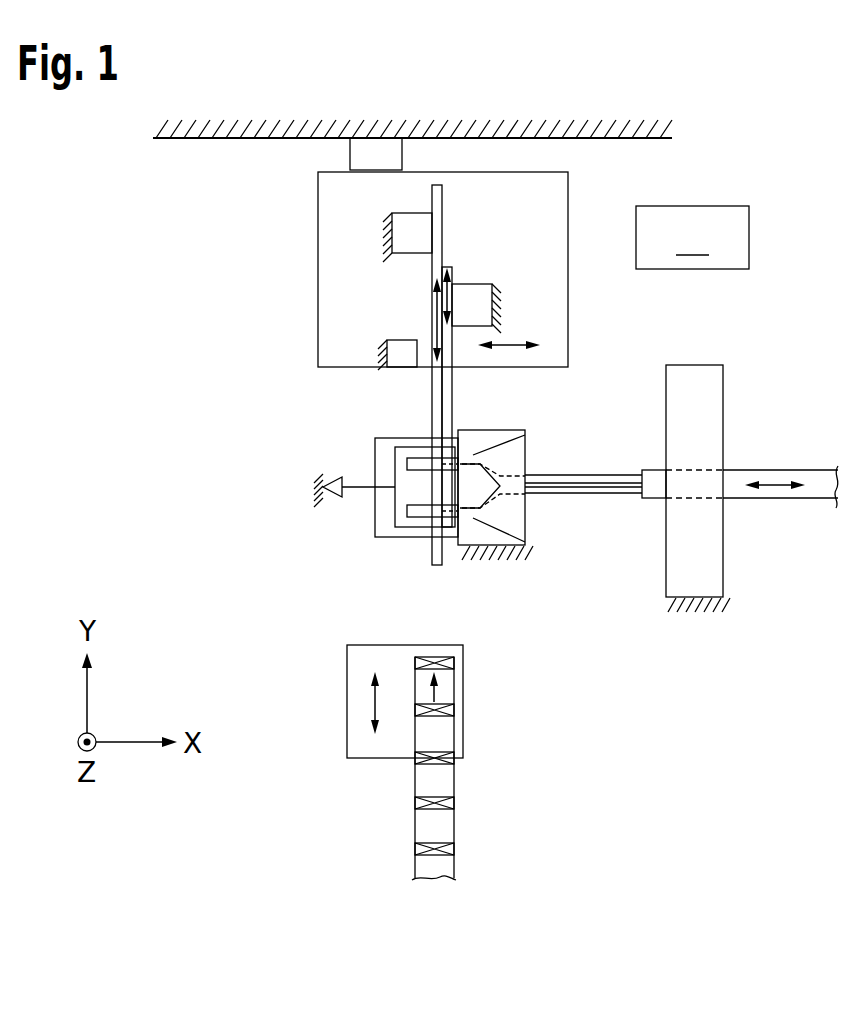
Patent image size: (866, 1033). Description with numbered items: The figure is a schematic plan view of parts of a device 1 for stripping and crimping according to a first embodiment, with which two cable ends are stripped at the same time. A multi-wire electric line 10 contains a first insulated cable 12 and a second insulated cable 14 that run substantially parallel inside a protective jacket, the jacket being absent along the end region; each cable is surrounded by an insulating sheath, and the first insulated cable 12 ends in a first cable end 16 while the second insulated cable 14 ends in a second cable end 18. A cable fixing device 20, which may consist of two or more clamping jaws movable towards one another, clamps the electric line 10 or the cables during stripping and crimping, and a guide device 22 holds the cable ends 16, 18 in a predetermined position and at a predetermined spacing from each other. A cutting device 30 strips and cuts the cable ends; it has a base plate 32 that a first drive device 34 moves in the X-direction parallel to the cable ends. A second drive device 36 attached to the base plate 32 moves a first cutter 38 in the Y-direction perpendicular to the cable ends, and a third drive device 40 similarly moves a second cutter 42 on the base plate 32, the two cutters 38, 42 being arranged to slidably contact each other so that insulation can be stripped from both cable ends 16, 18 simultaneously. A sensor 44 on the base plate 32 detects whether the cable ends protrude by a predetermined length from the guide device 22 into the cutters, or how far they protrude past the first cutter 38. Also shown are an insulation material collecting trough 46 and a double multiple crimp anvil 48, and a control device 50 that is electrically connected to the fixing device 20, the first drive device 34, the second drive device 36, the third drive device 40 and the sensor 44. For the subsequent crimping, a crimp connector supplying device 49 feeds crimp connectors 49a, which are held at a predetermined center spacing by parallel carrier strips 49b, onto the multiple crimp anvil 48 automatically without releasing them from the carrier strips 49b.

The device for stripping and crimping 1 is at (716, 162).
The multi-wire electric line 10 is at (820, 488).
The first insulated cable 12 is at (597, 478).
The second insulated cable 14 is at (593, 495).
The first cable end 16 is at (414, 465).
The second cable end 18 is at (414, 512).
The cable fixing device 20 is at (710, 577).
The guide device 22 is at (494, 540).
The cutting device 30 is at (369, 269).
The base plate 32 is at (318, 325).
The first drive device 34 is at (374, 156).
The second drive device 36 is at (410, 232).
The first cutter 38 is at (434, 279).
The third drive device 40 is at (478, 308).
The second cutter 42 is at (452, 268).
The sensor 44 is at (402, 362).
The insulation material collecting trough 46 is at (375, 505).
The multiple crimp anvil 48 is at (392, 514).
The crimp connector supplying device 49 is at (406, 762).
The crimp connectors 49a is at (455, 804).
The carrier strips 49b is at (440, 731).
The control device 50 is at (692, 237).